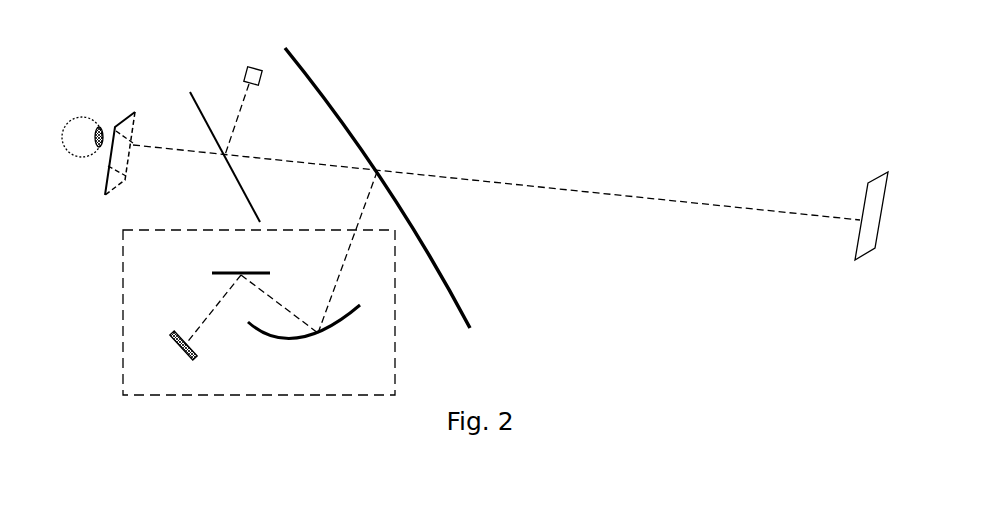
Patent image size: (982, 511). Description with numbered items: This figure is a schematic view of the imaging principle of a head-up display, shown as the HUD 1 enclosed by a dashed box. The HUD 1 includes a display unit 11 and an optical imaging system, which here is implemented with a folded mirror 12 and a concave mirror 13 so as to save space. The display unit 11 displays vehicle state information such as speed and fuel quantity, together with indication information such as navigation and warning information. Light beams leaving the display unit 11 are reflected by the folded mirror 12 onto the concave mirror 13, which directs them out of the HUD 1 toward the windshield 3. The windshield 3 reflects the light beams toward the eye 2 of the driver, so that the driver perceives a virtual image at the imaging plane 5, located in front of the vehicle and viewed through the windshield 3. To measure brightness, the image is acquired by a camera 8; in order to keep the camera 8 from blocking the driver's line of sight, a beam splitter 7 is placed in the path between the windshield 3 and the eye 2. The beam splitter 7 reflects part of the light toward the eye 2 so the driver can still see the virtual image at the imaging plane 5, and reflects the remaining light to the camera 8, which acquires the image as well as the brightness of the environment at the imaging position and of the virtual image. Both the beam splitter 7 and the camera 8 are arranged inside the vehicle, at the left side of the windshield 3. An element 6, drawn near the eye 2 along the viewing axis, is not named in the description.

The HUD 1 is at (395, 357).
The human eye 2 is at (63, 128).
The windshield 3 is at (315, 80).
The imaging plane 5 is at (868, 252).
The optical element 6 is at (132, 112).
The beam splitter 7 is at (190, 90).
The camera 8 is at (253, 63).
The display unit 11 is at (195, 358).
The folded mirror 12 is at (217, 273).
The concave mirror 13 is at (340, 325).